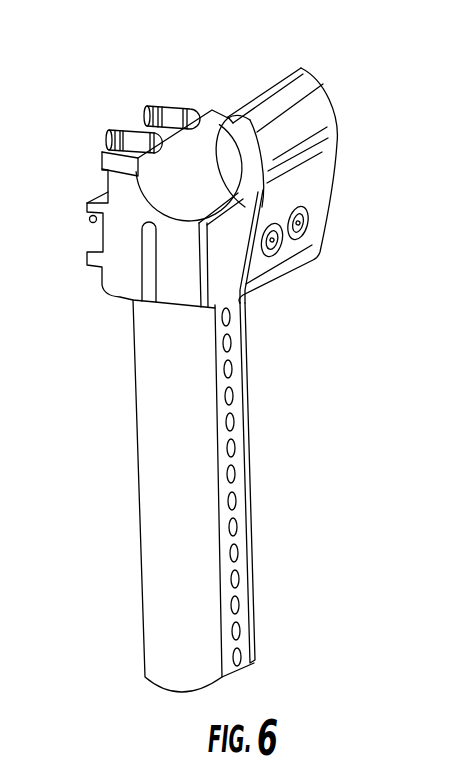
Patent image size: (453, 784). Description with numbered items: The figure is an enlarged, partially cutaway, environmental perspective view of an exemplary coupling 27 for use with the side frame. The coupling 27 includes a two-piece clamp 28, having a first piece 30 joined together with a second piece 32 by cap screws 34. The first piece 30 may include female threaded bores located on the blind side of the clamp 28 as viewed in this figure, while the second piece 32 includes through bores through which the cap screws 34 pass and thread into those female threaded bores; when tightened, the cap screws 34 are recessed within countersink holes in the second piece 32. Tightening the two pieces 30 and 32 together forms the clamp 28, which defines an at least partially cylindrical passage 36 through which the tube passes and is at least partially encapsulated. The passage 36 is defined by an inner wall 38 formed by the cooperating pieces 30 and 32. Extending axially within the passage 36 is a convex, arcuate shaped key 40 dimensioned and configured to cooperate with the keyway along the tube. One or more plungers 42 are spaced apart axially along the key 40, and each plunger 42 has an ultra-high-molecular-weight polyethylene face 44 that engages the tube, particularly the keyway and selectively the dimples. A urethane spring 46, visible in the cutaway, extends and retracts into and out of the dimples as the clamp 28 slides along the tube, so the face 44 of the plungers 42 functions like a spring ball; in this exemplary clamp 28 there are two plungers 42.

The coupling 27 is at (347, 287).
The two-piece clamp 28 is at (273, 308).
The first piece 30 is at (120, 288).
The second piece 32 is at (322, 178).
The cap screws 34 is at (288, 234).
The partially cylindrical passage 36 is at (162, 176).
The inner wall 38 is at (188, 199).
The key 40 is at (228, 99).
The plungers 42 is at (186, 163).
The ultra-high-molecular-weight polyethylene face 44 is at (306, 76).
The urethane spring 46 is at (143, 118).